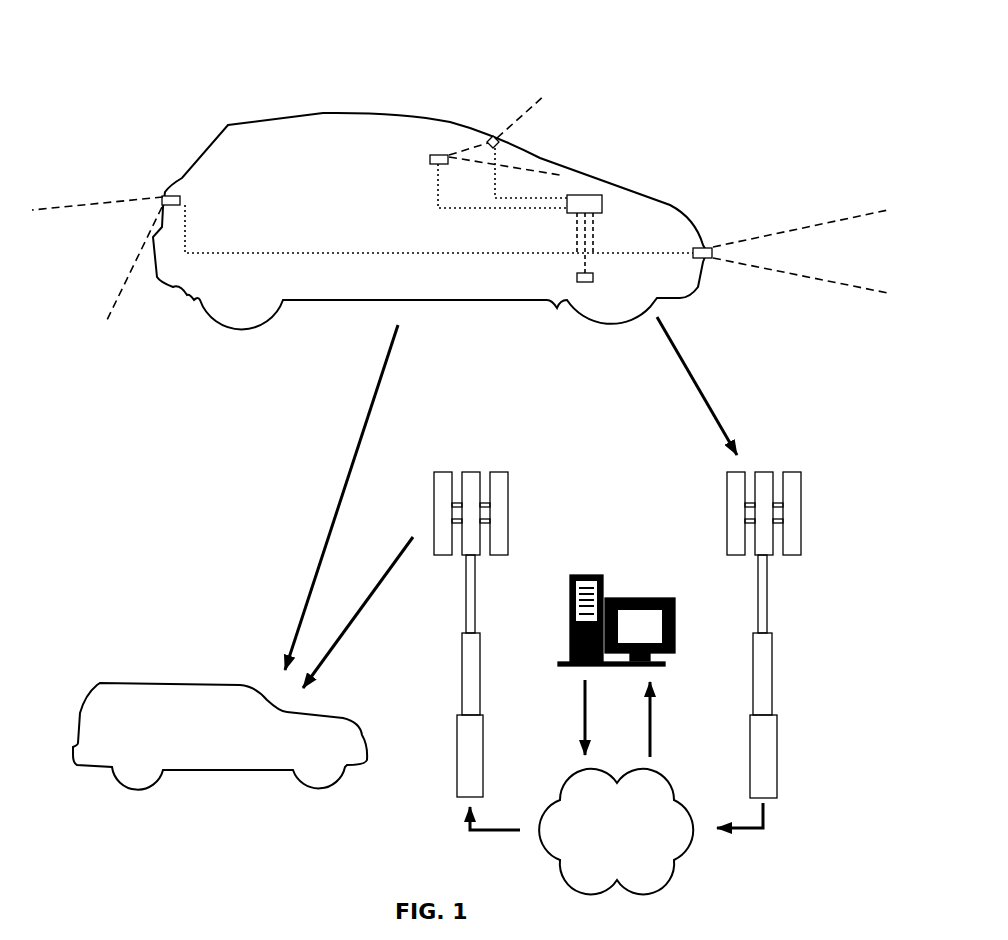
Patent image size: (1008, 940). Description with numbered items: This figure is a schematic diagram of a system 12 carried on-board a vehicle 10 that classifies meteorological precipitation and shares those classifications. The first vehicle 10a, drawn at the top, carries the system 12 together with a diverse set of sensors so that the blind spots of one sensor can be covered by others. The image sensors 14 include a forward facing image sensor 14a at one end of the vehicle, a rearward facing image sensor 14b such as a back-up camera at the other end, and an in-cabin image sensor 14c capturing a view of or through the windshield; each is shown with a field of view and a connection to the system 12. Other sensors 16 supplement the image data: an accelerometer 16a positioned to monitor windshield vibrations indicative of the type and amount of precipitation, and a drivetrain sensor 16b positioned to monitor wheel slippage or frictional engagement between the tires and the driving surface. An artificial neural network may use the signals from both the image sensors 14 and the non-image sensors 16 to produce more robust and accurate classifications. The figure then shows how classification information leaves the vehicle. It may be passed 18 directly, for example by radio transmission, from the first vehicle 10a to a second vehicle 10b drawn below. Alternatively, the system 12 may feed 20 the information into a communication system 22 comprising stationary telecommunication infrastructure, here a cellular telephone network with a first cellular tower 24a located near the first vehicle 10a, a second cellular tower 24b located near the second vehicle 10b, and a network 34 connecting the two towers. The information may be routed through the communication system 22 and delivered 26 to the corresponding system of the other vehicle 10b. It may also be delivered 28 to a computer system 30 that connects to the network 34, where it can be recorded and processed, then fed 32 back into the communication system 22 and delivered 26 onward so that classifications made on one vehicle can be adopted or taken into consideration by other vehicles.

The vehicle 10 is at (382, 406).
The first vehicle 10a is at (562, 58).
The second vehicle 10b is at (167, 661).
The system 12 is at (600, 183).
The image sensors 14 is at (460, 200).
The forward facing image sensor 14a is at (712, 248).
The rearward facing image sensor 14b is at (163, 196).
The in-cabin image sensor 14c is at (437, 154).
The other sensors 16 is at (535, 216).
The accelerometer 16a is at (500, 137).
The drivetrain sensor 16b is at (580, 284).
The direct vehicle-to-vehicle passing of classification information 18 is at (355, 447).
The feeding of classification information into communication system 20 is at (699, 390).
The communication system 22 is at (791, 416).
The first cellular tower 24a is at (817, 487).
The second cellular tower 24b is at (524, 497).
The delivery of classification information to other vehicles 26 is at (357, 615).
The delivery of classification information to computer system 28 is at (652, 728).
The computer system 30 is at (645, 568).
The feeding of processed information back into communication system 32 is at (583, 722).
The network 34 is at (630, 842).